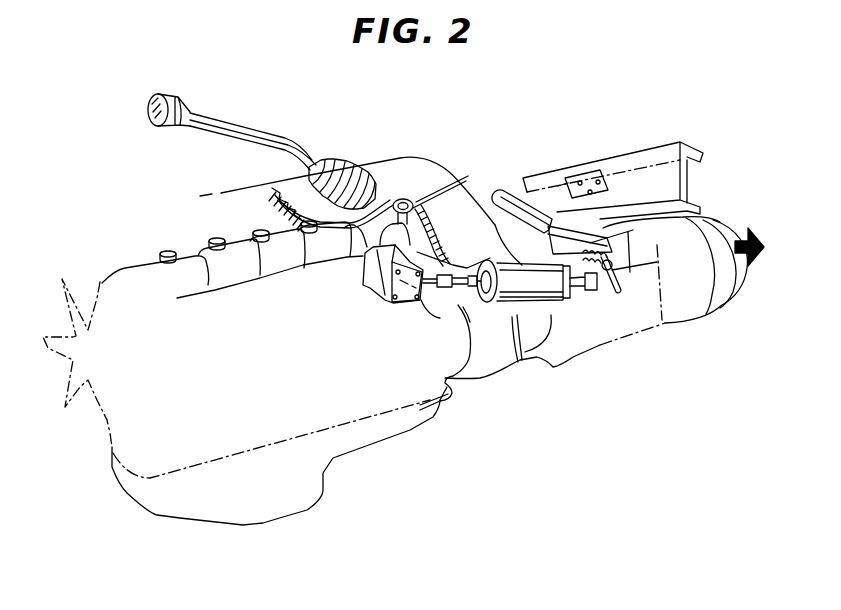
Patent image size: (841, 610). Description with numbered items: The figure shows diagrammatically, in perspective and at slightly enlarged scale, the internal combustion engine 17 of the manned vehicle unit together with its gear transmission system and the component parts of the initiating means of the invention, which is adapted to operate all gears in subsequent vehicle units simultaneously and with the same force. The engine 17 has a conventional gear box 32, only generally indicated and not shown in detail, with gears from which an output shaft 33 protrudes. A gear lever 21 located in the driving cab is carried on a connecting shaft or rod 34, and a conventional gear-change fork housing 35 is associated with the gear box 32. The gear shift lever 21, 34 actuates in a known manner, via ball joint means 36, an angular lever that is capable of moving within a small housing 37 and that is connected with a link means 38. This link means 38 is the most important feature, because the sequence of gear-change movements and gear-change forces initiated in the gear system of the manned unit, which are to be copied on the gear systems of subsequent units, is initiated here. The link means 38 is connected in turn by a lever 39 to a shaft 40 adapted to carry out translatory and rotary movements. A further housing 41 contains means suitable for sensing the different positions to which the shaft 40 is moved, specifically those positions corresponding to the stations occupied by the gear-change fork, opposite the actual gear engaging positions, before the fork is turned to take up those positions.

The internal combustion engine 17 is at (278, 417).
The gear lever 21 is at (181, 110).
The gear box 32 is at (578, 345).
The output shaft 33 is at (752, 258).
The connecting shaft or rod 34 is at (403, 245).
The gear-change fork housing 35 is at (582, 237).
The ball joint means 36 is at (420, 252).
The small housing 37 is at (373, 283).
The link means 38 is at (521, 283).
The lever 39 is at (607, 300).
The shaft 40 is at (607, 270).
The further housing 41 is at (512, 195).